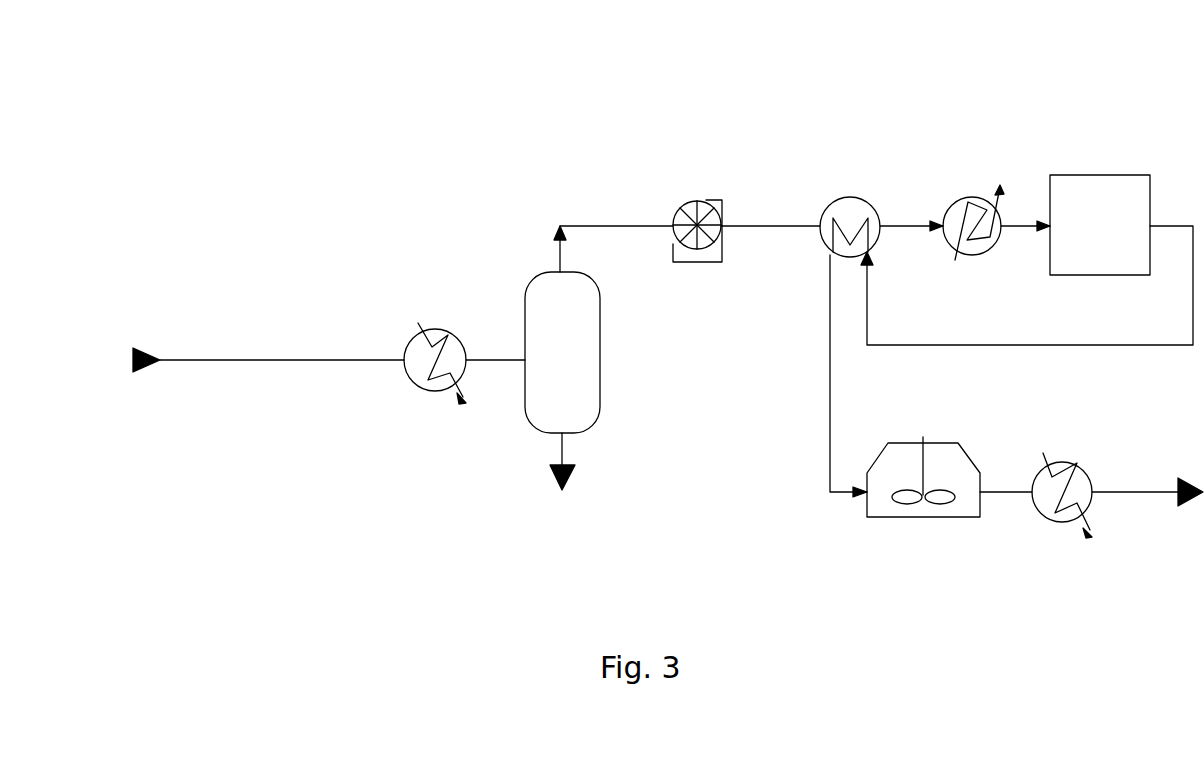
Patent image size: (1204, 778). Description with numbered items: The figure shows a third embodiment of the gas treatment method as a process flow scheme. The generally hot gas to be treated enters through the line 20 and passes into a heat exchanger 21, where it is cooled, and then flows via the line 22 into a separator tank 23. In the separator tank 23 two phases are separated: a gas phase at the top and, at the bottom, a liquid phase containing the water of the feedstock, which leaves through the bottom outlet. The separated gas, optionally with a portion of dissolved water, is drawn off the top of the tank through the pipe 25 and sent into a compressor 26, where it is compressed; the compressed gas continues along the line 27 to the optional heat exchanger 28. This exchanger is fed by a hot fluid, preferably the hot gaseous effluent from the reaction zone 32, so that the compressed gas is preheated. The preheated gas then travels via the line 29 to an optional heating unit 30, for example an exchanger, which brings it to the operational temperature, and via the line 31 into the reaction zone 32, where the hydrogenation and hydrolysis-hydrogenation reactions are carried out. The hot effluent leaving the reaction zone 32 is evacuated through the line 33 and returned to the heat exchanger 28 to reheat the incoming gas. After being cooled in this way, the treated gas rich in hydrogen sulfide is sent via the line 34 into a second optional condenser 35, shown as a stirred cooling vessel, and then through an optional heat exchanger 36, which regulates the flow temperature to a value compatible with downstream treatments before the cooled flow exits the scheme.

The line 20 is at (235, 358).
The heat exchanger 21 is at (418, 327).
The line 22 is at (495, 357).
The separator tank 23 is at (600, 360).
The pipe 25 is at (590, 225).
The compressor 26 is at (705, 200).
The compressed gas line 27 is at (767, 226).
The heat exchanger 28 is at (850, 198).
The mixed stream line 29 is at (905, 225).
The heating unit 30 is at (975, 198).
The heated stream line 31 is at (1010, 230).
The reaction zone 32 is at (1115, 175).
The line 33 is at (1055, 345).
The line 34 is at (827, 392).
The second condenser 35 is at (905, 515).
The heat exchanger 36 is at (1050, 520).